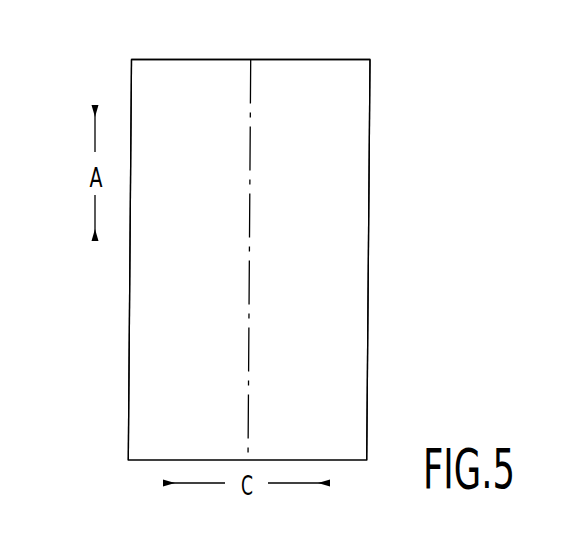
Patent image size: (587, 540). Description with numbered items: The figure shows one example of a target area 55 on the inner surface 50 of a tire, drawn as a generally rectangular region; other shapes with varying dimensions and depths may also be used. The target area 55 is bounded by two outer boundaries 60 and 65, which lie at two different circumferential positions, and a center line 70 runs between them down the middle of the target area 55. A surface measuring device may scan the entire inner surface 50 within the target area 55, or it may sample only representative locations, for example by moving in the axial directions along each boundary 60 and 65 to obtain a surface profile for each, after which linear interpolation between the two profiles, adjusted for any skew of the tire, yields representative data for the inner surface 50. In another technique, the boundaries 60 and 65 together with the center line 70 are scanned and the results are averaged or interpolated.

The inner surface 50 is at (322, 150).
The target area 55 is at (190, 90).
The outer boundary 60 is at (126, 316).
The outer boundary 65 is at (374, 270).
The center line 70 is at (260, 287).